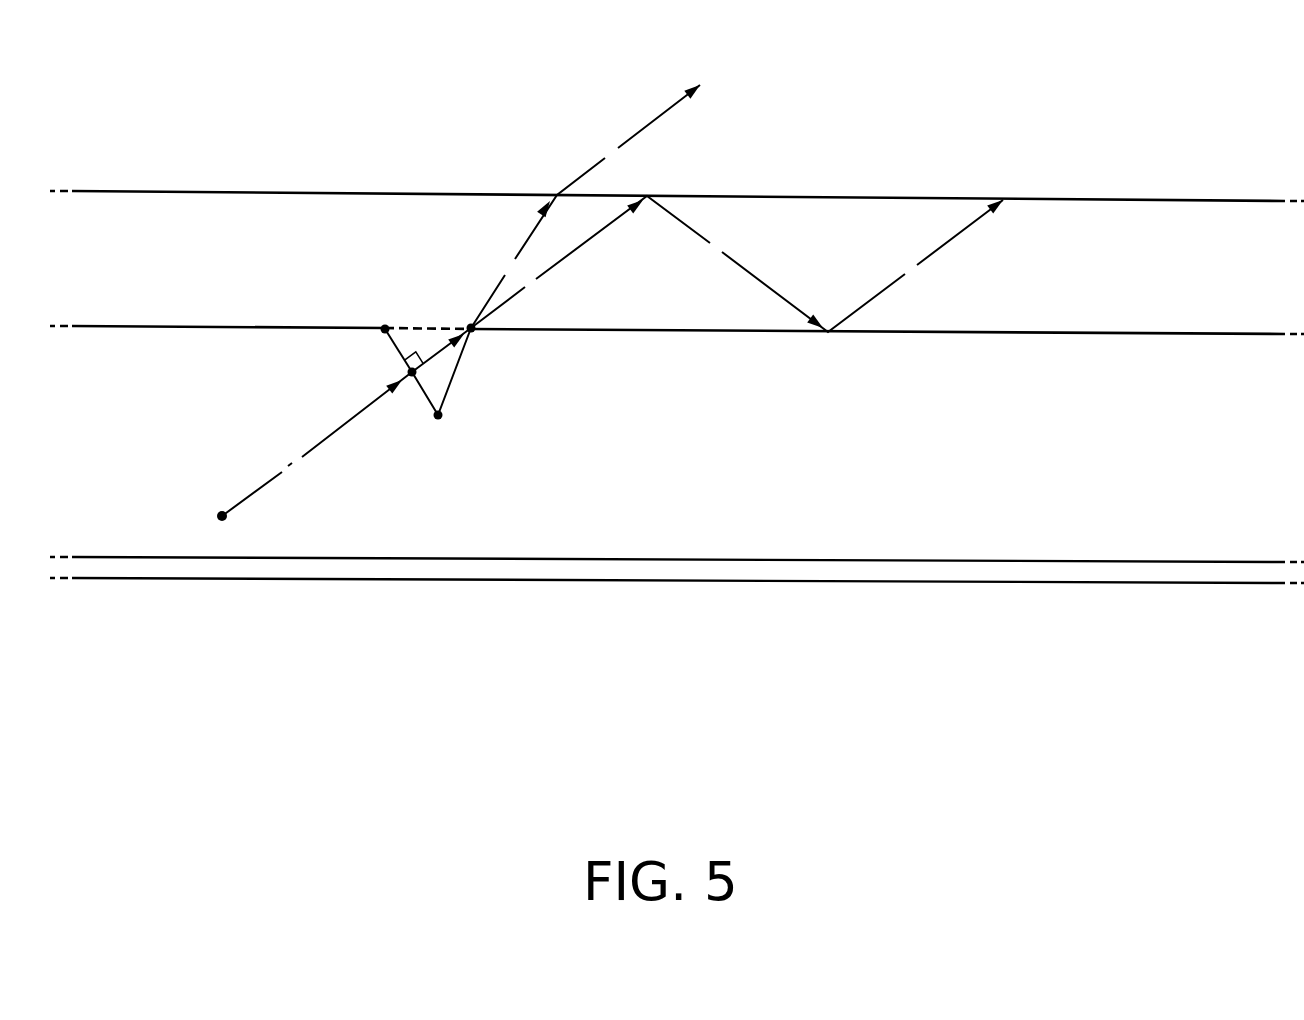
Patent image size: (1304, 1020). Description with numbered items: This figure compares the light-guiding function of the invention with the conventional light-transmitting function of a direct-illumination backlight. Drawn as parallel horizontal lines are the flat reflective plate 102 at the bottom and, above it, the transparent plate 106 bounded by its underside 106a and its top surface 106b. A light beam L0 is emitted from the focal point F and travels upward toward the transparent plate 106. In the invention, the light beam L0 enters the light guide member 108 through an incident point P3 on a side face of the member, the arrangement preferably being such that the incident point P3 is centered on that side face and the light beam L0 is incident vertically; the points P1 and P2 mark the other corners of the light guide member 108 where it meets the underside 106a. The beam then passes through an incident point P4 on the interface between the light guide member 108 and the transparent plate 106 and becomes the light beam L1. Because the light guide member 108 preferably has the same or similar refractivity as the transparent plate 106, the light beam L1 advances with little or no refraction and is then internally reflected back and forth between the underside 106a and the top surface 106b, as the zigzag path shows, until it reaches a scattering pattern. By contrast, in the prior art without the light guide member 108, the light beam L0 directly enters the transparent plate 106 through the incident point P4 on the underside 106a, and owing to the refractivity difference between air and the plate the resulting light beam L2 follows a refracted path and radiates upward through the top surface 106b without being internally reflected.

The flat reflective plate 102 is at (1098, 570).
The transparent plate 106 is at (677, 236).
The underside of transparent plate 106a is at (190, 336).
The top surface of transparent plate 106b is at (268, 176).
The light guide member 108 is at (428, 342).
The focal point F is at (222, 521).
The light beam L0 is at (252, 497).
The light beam inside transparent plate L1 is at (588, 242).
The refracted light beam L2 is at (520, 247).
The point P1 is at (438, 419).
The point P2 is at (385, 329).
The incident point P3 is at (412, 376).
The incident point P4 is at (471, 332).